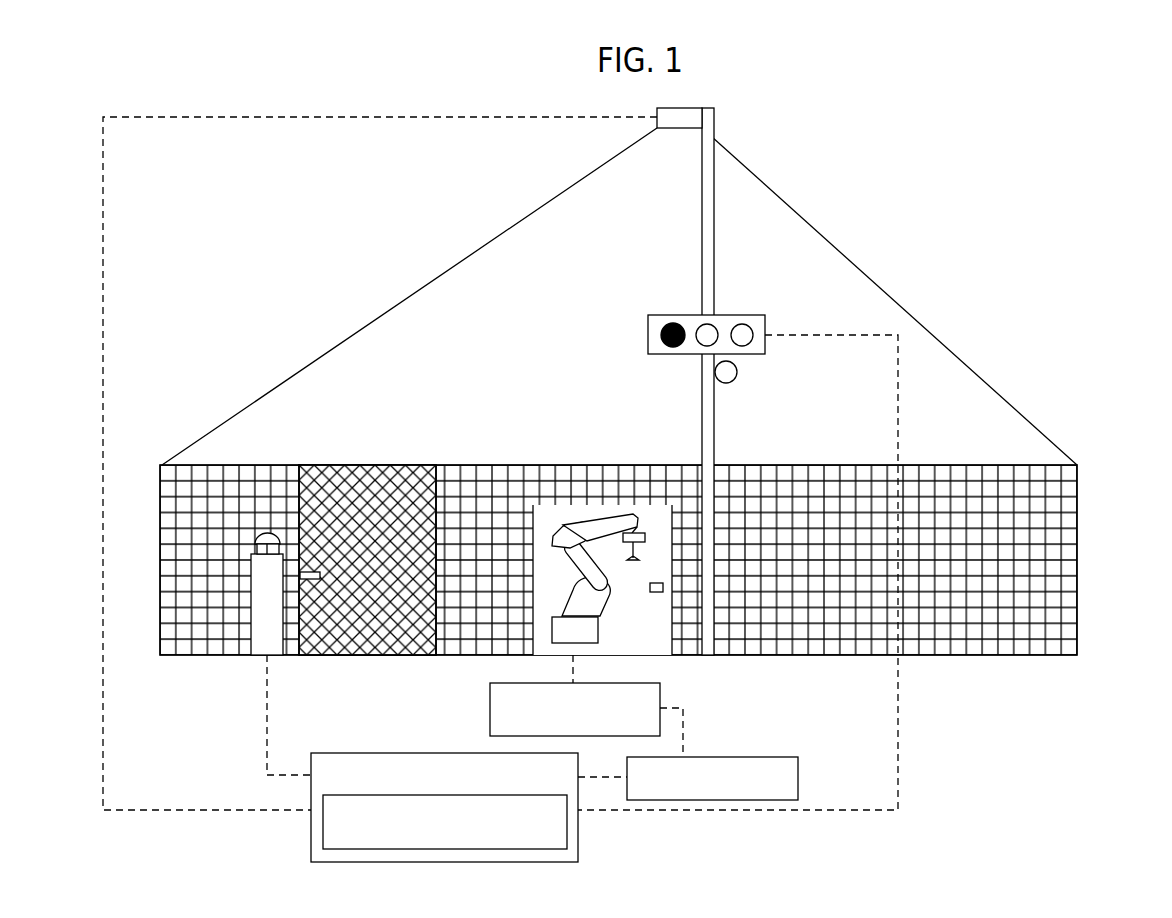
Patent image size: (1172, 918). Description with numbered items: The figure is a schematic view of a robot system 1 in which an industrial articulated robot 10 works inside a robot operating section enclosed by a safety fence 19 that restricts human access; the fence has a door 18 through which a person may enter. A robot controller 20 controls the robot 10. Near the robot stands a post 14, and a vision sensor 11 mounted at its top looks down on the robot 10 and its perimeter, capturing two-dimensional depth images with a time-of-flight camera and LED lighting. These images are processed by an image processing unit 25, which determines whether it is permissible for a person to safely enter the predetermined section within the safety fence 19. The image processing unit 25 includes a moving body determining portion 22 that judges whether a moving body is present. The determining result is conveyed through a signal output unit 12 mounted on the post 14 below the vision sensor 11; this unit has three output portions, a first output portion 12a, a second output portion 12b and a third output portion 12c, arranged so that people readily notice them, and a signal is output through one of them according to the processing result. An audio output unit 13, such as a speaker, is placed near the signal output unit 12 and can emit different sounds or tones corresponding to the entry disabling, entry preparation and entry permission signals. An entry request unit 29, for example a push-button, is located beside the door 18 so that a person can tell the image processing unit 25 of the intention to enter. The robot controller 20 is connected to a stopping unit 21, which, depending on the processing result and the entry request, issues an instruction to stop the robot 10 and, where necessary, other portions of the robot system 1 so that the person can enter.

The robot system 1 is at (955, 200).
The robot 10 is at (573, 537).
The vision sensor 11 is at (682, 116).
The signal output unit 12 is at (696, 296).
The first output portion 12a is at (663, 342).
The second output portion 12b is at (707, 330).
The third output portion 12c is at (743, 330).
The audio output unit 13 is at (727, 373).
The post 14 is at (715, 252).
The door 18 is at (384, 500).
The safety fence 19 is at (1068, 522).
The robot controller 20 is at (490, 703).
The stopping unit 21 is at (798, 780).
The moving body determining portion 22 is at (570, 830).
The image processing unit 25 is at (436, 812).
The entry request unit 29 is at (262, 650).